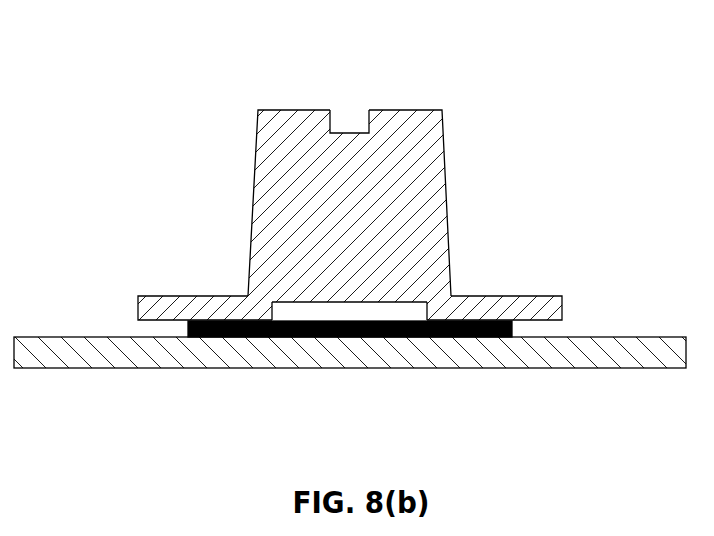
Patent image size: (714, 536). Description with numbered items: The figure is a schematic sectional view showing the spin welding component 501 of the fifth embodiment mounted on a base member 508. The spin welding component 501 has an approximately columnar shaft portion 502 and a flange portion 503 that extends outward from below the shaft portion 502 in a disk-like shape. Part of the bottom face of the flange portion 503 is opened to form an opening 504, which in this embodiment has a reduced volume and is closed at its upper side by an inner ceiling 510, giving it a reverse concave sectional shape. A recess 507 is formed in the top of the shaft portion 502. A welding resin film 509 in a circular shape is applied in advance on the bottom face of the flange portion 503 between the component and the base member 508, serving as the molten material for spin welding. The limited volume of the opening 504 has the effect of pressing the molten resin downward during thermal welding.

The spin welding component 501 is at (341, 237).
The shaft portion 502 is at (253, 185).
The flange portion 503 is at (163, 307).
The opening 504 is at (318, 310).
The recess 507 is at (358, 117).
The base member 508 is at (107, 353).
The welding resin film 509 is at (210, 333).
The inner ceiling 510 is at (392, 307).